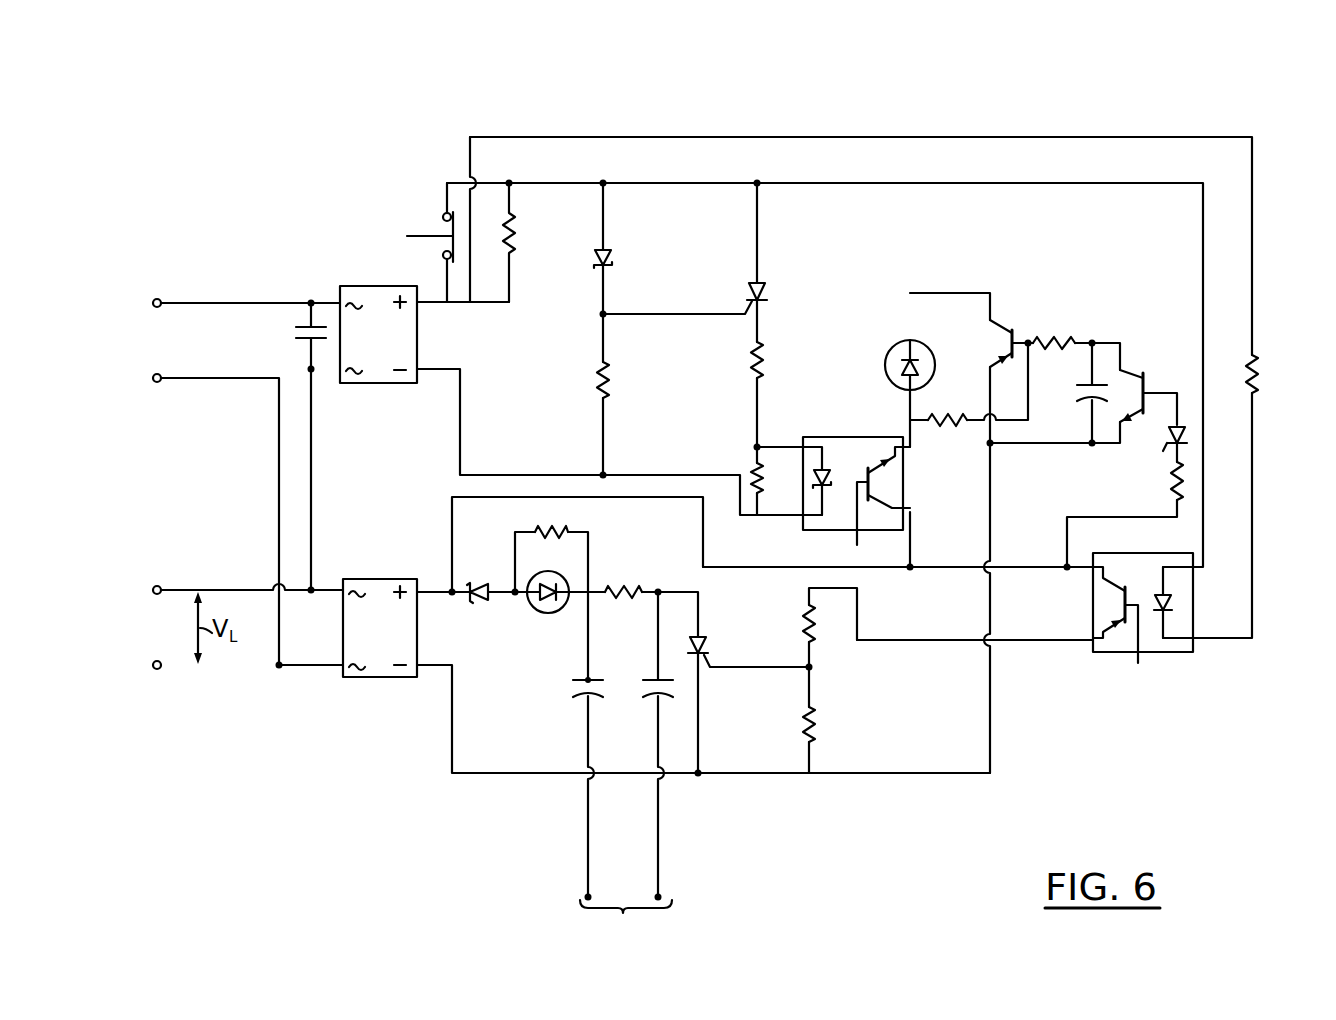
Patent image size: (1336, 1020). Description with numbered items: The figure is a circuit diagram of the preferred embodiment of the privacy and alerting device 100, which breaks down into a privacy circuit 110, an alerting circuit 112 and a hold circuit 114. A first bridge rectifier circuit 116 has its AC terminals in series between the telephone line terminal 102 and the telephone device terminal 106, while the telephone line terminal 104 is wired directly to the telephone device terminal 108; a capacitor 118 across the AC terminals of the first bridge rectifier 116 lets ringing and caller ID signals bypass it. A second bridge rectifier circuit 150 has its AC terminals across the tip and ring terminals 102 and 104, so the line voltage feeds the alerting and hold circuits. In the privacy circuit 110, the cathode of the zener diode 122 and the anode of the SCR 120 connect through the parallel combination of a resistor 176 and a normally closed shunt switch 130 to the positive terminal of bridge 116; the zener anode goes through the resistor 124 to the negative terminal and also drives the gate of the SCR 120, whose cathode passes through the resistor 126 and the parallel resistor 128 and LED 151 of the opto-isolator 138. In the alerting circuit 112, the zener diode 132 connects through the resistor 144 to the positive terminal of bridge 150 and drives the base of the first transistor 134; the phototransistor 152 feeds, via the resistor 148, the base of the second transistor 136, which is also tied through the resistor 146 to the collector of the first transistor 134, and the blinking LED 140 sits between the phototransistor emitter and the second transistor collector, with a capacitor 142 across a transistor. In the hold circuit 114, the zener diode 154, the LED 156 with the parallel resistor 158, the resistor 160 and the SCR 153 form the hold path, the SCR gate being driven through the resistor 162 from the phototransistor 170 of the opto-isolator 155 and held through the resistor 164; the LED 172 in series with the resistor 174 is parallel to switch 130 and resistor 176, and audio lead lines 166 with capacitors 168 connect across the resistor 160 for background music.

The privacy and alerting device 100 is at (1120, 103).
The telephone line terminal 102 is at (158, 585).
The telephone line terminal 104 is at (158, 670).
The telephone device terminal 106 is at (158, 298).
The telephone device terminal 108 is at (158, 373).
The privacy circuit 110 is at (678, 160).
The alerting circuit 112 is at (1022, 268).
The hold circuit 114 is at (812, 798).
The first bridge rectifier circuit 116 is at (356, 285).
The capacitor 118 is at (298, 330).
The silicon controlled rectifier 120 is at (750, 290).
The zener diode 122 is at (611, 259).
The resistor 124 is at (610, 382).
The resistor 126 is at (750, 365).
The resistor 128 is at (750, 470).
The normally closed shunt switch 130 is at (408, 232).
The zener diode 132 is at (1168, 447).
The first transistor 134 is at (1145, 372).
The second transistor 136 is at (1015, 331).
The opto-isolator 138 is at (843, 435).
The LED 140 is at (899, 342).
The capacitor 142 is at (1088, 382).
The resistor 144 is at (1171, 487).
The resistor 146 is at (1063, 340).
The resistor 148 is at (949, 415).
The second bridge rectifier circuit 150 is at (382, 578).
The LED of opto-isolator 151 is at (813, 480).
The phototransistor 152 is at (895, 480).
The SCR 153 is at (708, 640).
The zener diode 154 is at (478, 604).
The opto-isolator 155 is at (1114, 660).
The LED 156 is at (547, 615).
The resistor 158 is at (540, 528).
The resistor 160 is at (622, 585).
The resistor 162 is at (813, 628).
The resistor 164 is at (817, 730).
The lead lines 166 is at (626, 921).
The capacitors 168 is at (658, 697).
The phototransistor 170 is at (1110, 595).
The LED of opto-isolator 172 is at (1174, 603).
The resistor 174 is at (1258, 372).
The resistor 176 is at (514, 248).